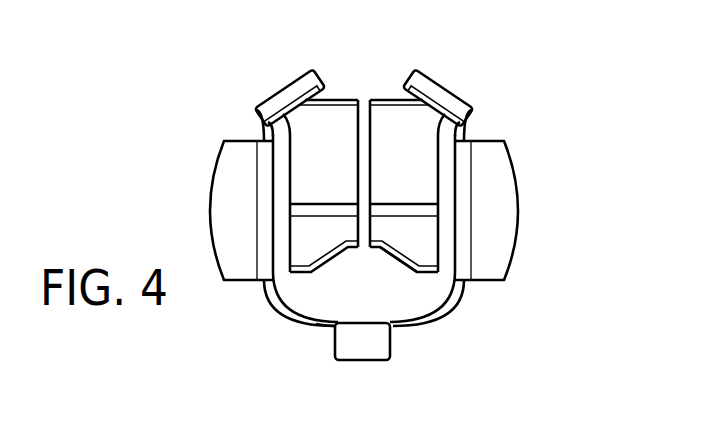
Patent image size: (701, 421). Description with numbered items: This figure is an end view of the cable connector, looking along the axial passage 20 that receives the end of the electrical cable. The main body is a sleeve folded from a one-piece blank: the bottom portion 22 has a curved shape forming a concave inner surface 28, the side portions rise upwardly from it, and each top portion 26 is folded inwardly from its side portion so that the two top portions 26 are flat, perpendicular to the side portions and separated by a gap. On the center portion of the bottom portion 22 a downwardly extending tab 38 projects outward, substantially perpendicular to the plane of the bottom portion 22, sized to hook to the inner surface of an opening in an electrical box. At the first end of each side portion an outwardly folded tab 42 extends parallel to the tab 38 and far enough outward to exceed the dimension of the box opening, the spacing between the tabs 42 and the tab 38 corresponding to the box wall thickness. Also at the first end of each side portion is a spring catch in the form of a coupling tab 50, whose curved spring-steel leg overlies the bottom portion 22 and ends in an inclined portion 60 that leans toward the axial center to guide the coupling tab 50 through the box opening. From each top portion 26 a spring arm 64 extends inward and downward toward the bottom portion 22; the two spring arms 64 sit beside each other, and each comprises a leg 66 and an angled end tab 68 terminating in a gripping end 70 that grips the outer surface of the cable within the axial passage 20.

The axial passage 20 is at (404, 303).
The bottom portion 22 is at (292, 323).
The top portion 26 is at (345, 100).
The concave inner surface 28 is at (330, 327).
The tab 38 is at (362, 352).
The tab 42 is at (222, 216).
The coupling tab 50 is at (254, 116).
The inclined portion 60 is at (303, 88).
The spring arm 64 is at (448, 170).
The leg 66 is at (383, 130).
The angled end tab 68 is at (428, 242).
The gripping end 70 is at (380, 262).